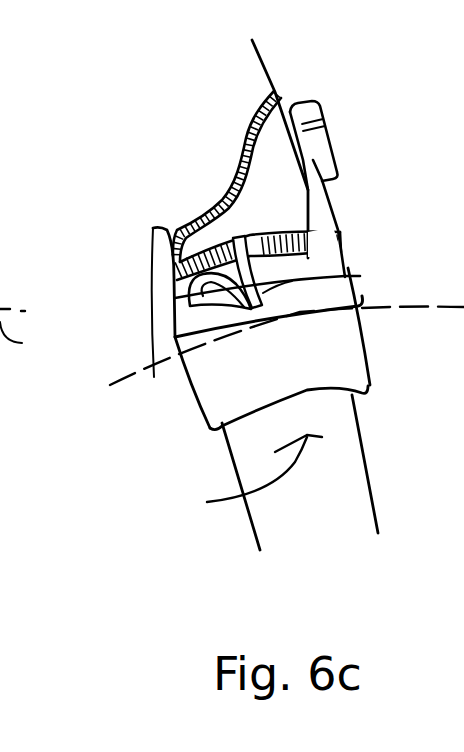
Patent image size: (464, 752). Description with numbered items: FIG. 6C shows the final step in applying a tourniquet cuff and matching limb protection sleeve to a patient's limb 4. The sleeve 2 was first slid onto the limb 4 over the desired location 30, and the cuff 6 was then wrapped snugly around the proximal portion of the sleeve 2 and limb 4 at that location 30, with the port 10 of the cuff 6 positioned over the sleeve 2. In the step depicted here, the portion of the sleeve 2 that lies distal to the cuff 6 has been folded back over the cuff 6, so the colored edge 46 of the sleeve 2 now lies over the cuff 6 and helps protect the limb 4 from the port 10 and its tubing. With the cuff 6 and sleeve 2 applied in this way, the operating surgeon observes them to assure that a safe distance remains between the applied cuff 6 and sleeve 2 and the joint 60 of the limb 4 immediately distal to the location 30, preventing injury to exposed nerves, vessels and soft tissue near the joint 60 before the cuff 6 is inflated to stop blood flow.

The sleeve 2 is at (188, 407).
The limb 4 is at (367, 470).
The cuff 6 is at (343, 262).
The port 10 is at (326, 148).
The location 30 is at (127, 373).
The colored edge 46 is at (218, 203).
The joint 60 is at (247, 477).